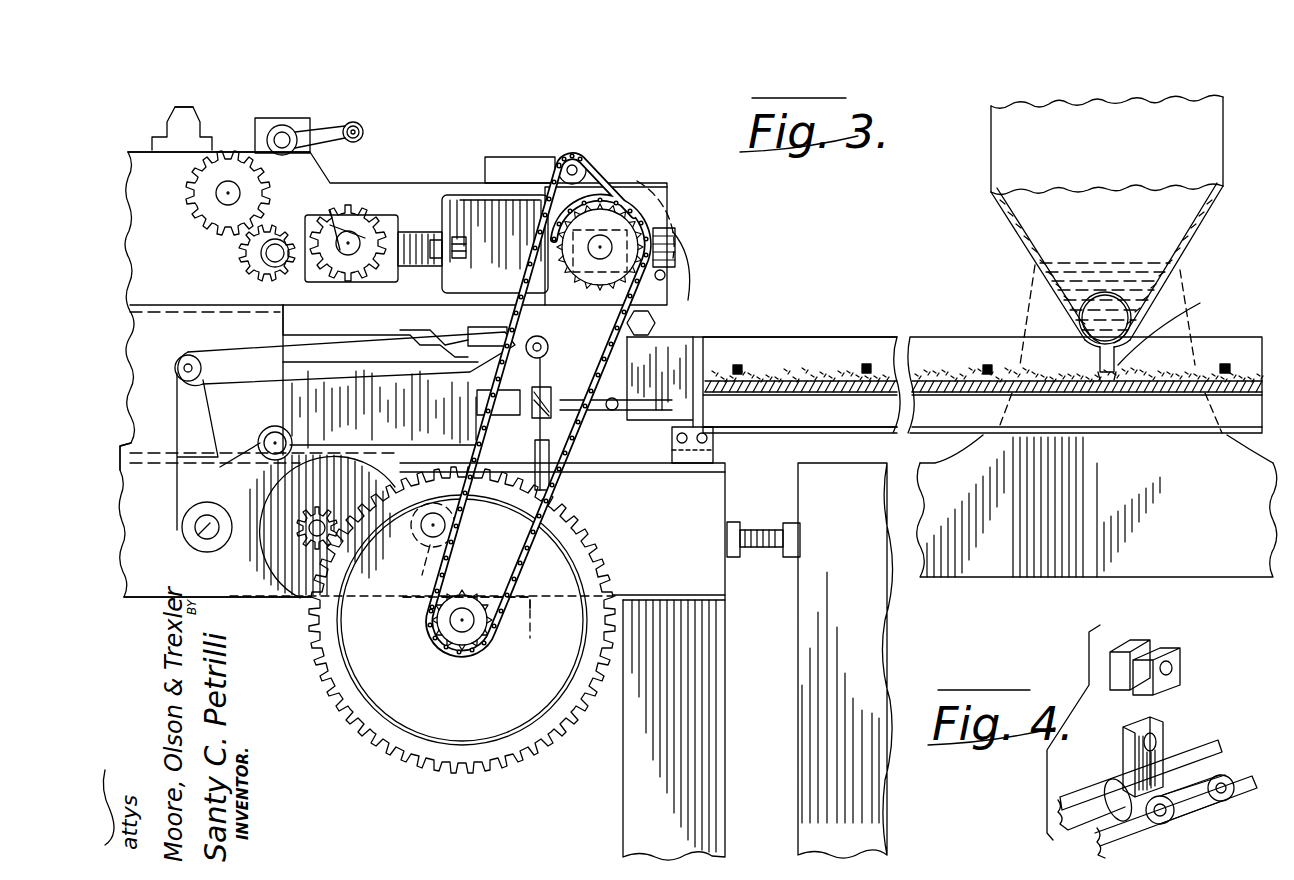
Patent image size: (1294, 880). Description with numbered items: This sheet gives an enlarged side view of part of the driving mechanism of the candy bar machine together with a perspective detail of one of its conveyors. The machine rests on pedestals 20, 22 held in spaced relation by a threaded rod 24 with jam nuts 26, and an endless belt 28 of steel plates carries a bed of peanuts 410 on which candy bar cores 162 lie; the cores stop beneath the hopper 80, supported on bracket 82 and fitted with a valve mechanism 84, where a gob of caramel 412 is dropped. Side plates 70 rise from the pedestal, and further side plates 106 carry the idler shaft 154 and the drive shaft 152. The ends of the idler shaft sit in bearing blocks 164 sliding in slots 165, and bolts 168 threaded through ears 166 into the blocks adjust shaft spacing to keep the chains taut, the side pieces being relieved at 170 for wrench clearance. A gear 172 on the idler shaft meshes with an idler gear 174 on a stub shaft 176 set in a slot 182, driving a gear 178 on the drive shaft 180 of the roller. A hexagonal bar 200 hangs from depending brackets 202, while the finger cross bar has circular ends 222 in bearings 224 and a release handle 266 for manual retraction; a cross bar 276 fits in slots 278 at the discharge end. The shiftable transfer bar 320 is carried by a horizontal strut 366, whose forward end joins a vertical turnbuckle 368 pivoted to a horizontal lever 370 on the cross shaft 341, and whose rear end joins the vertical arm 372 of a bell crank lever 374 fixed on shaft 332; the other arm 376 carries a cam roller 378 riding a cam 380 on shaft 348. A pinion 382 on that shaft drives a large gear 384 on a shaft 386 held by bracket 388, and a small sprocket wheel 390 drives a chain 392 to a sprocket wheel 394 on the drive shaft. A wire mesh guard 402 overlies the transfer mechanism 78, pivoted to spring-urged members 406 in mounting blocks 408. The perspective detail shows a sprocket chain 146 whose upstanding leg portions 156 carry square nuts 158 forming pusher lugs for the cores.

In FIG. 3, the pedestal 20 is at (230, 617).
In FIG. 3, the pedestal 22 is at (955, 600).
In FIG. 3, the threaded rod 24 is at (768, 555).
In FIG. 3, the jam nut 26 is at (768, 530).
In FIG. 3, the endless belt 28 is at (820, 398).
In FIG. 3, the side plate 70 is at (706, 310).
In FIG. 3, the transfer mechanism 78 is at (720, 340).
In FIG. 3, the hopper 80 is at (1205, 147).
In FIG. 3, the bracket 82 is at (1167, 302).
In FIG. 3, the valve mechanism 84 is at (1110, 292).
In FIG. 3, the side plate 106 is at (167, 177).
In FIG. 3, the drive shaft 152 is at (660, 228).
In FIG. 3, the idler shaft 154 is at (350, 240).
In FIG. 3, the bearing block 164 is at (338, 230).
In FIG. 3, the slot 165 is at (283, 318).
In FIG. 3, the ear 166 is at (425, 232).
In FIG. 3, the bolt 168 is at (468, 245).
In FIG. 3, the relieved portion 170 is at (530, 205).
In FIG. 3, the gear 172 is at (322, 335).
In FIG. 3, the idler gear 174 is at (175, 264).
In FIG. 3, the stub shaft 176 is at (270, 255).
In FIG. 3, the gear 178 is at (175, 247).
In FIG. 3, the drive shaft 180 is at (230, 190).
In FIG. 3, the slot 182 is at (330, 225).
In FIG. 3, the hexagonal bar 200 is at (185, 125).
In FIG. 3, the depending bracket 202 is at (167, 130).
In FIG. 3, the circular end 222 is at (285, 140).
In FIG. 3, the bearing 224 is at (272, 118).
In FIG. 3, the release handle 266 is at (355, 125).
In FIG. 3, the cross bar 276 is at (675, 250).
In FIG. 3, the slot 278 is at (680, 295).
In FIG. 3, the shiftable transfer bar 320 is at (495, 244).
In FIG. 3, the shaft 332 is at (200, 527).
In FIG. 3, the cross shaft 341 is at (420, 560).
In FIG. 3, the shaft 348 is at (305, 530).
In FIG. 3, the strut 366 is at (400, 350).
In FIG. 3, the turnbuckle 368 is at (560, 437).
In FIG. 3, the lever 370 is at (520, 585).
In FIG. 3, the arm 372 is at (200, 383).
In FIG. 3, the bell crank lever 374 is at (160, 504).
In FIG. 3, the arm 376 is at (258, 448).
In FIG. 3, the cam roller 378 is at (292, 440).
In FIG. 3, the cam 380 is at (300, 600).
In FIG. 3, the pinion 382 is at (340, 560).
In FIG. 3, the large gear 384 is at (490, 732).
In FIG. 3, the shaft 386 is at (470, 635).
In FIG. 3, the bracket 388 is at (530, 615).
In FIG. 3, the small sprocket wheel 390 is at (450, 632).
In FIG. 3, the chain 392 is at (600, 465).
In FIG. 3, the sprocket wheel 394 is at (605, 240).
In FIG. 3, the guard 402 is at (702, 188).
In FIG. 3, the member 406 is at (575, 168).
In FIG. 3, the mounting block 408 is at (530, 170).
In FIG. 3, the bed of peanuts 410 is at (965, 360).
In FIG. 3, the gob of caramel 412 is at (1212, 306).
In FIG. 4, the sprocket chain 146 is at (1215, 760).
In FIG. 4, the upstanding leg portion 156 is at (1160, 730).
In FIG. 4, the square nut 158 is at (1160, 660).
In FIG. 3, the candy bar core 162 is at (738, 365).